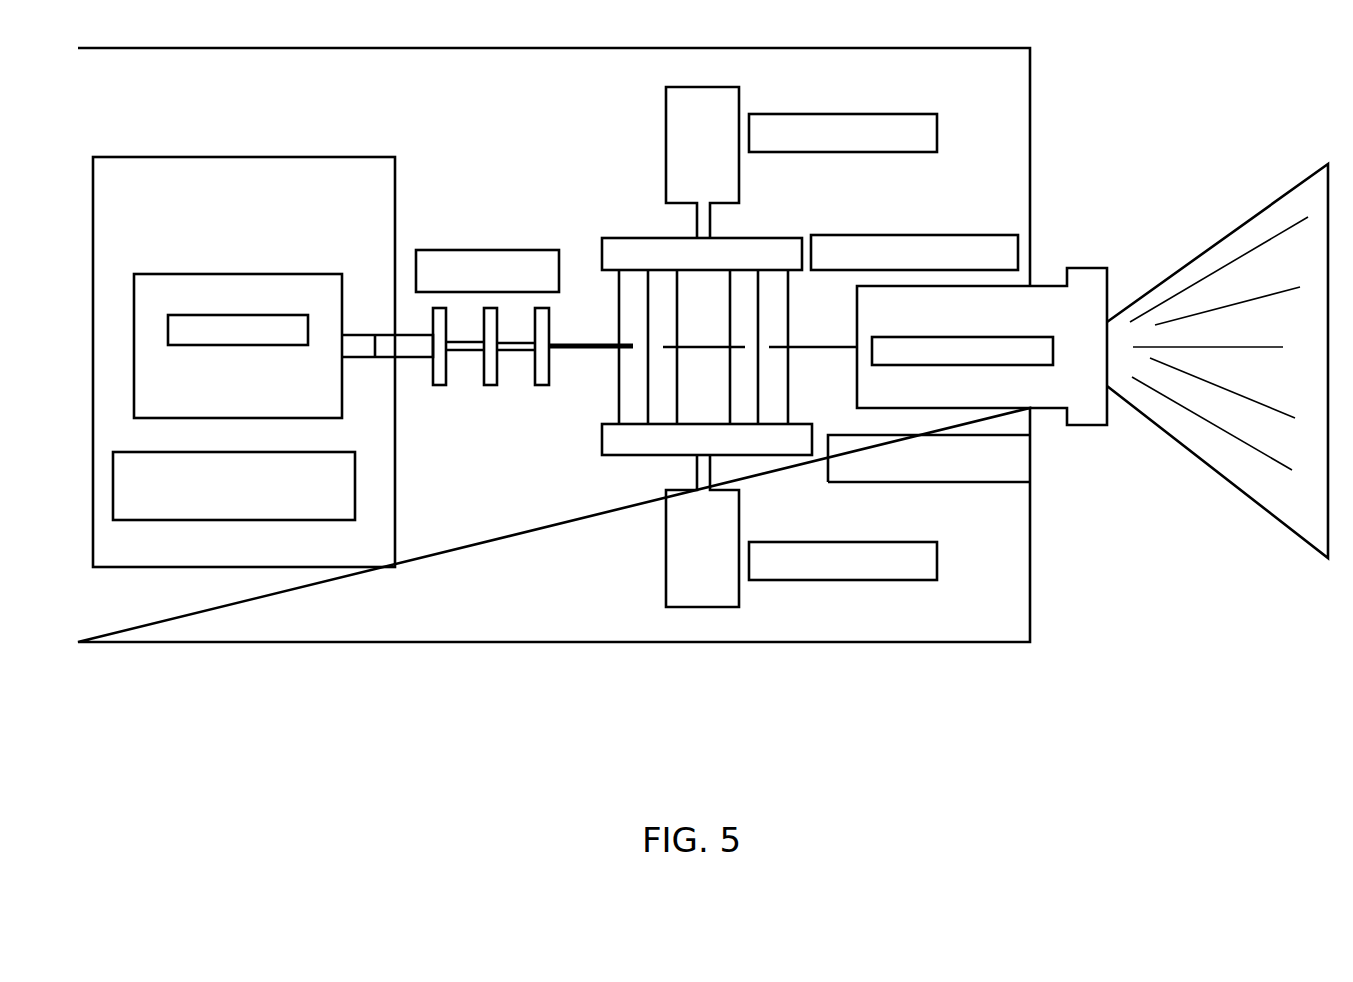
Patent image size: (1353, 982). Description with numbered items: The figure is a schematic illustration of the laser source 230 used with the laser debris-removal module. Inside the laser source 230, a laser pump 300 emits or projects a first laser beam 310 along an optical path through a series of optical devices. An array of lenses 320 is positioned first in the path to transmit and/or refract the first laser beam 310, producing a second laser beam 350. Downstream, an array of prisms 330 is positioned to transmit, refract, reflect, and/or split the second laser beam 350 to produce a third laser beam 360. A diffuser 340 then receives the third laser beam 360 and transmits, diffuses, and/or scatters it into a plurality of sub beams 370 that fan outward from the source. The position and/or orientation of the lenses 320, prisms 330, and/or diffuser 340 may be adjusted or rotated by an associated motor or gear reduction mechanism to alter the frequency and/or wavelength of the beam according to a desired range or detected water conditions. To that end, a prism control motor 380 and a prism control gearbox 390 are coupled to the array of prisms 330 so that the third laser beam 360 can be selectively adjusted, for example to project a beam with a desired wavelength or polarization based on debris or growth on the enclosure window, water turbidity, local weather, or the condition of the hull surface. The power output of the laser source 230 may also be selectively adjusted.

The laser source 230 is at (657, 676).
The laser pump 300 is at (340, 430).
The first laser beam 310 is at (420, 364).
The lens 320 is at (537, 392).
The prism 330 is at (747, 370).
The diffuser 340 is at (1005, 413).
The second laser beam 350 is at (572, 362).
The third laser beam 360 is at (835, 355).
The sub beams 370 is at (1186, 345).
The prism control motor 380 is at (742, 97).
The prism control gearbox 390 is at (625, 236).